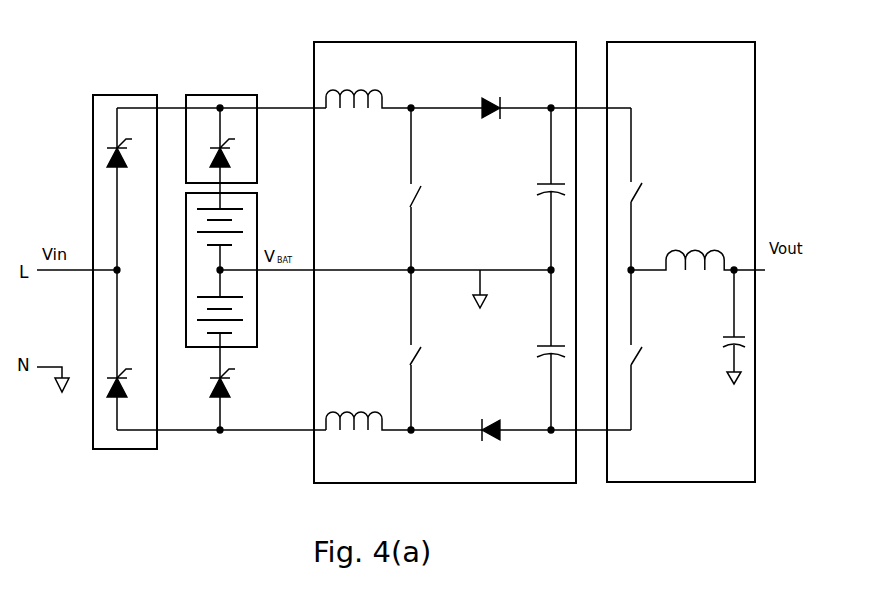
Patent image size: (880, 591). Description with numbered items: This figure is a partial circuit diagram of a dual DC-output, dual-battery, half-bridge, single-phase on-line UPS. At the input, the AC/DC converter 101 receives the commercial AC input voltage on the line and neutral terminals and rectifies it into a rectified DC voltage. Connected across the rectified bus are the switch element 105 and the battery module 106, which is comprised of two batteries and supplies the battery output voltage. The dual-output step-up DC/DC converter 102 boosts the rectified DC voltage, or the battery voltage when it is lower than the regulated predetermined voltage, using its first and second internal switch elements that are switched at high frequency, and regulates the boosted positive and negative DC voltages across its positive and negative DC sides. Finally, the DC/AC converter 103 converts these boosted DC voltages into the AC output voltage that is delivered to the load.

The AC/DC converter 101 is at (110, 92).
The dual-output step-up DC/DC converter 102 is at (490, 40).
The DC/AC converter 103 is at (693, 38).
The switch element 105 is at (220, 92).
The battery module 106 is at (258, 190).